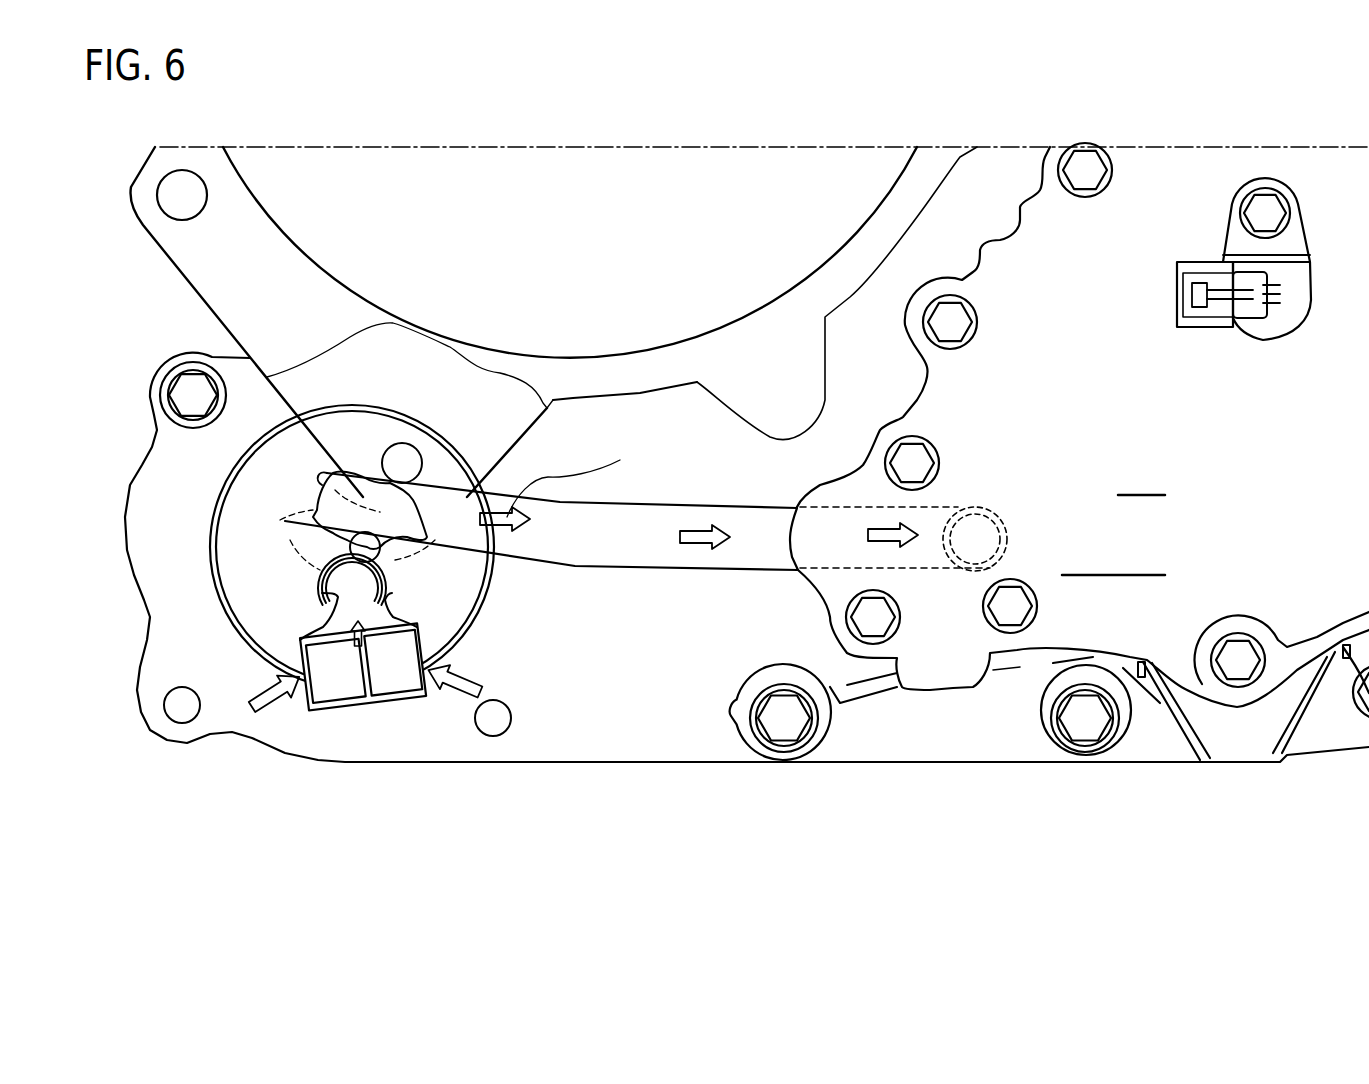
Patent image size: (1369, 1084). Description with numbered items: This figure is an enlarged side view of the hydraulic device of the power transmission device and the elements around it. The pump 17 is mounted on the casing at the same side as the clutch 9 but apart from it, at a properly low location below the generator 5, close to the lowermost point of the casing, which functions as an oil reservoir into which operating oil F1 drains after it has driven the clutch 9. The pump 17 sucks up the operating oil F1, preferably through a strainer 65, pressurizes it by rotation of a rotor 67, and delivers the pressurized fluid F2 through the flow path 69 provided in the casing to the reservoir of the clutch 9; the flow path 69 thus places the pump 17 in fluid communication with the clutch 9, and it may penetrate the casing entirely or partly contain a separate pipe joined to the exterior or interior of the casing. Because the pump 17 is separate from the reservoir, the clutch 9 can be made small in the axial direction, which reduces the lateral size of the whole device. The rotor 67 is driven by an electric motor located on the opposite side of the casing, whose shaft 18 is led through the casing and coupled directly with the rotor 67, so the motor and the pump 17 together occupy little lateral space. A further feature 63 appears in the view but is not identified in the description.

The generator 5 is at (292, 243).
The clutch 9 is at (1150, 782).
The pump 17 is at (242, 770).
The shaft 18 is at (333, 533).
The oil passage 63 is at (985, 508).
The strainer 65 is at (400, 700).
The rotor 67 is at (333, 563).
The flow path 69 is at (627, 570).
The operating oil F1 is at (462, 697).
The pressurized fluid F2 is at (692, 527).